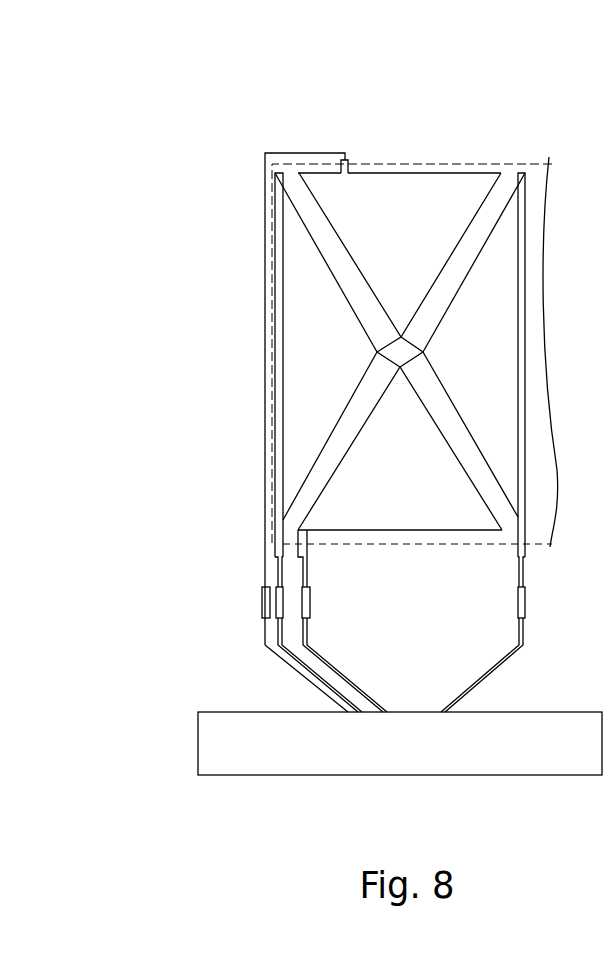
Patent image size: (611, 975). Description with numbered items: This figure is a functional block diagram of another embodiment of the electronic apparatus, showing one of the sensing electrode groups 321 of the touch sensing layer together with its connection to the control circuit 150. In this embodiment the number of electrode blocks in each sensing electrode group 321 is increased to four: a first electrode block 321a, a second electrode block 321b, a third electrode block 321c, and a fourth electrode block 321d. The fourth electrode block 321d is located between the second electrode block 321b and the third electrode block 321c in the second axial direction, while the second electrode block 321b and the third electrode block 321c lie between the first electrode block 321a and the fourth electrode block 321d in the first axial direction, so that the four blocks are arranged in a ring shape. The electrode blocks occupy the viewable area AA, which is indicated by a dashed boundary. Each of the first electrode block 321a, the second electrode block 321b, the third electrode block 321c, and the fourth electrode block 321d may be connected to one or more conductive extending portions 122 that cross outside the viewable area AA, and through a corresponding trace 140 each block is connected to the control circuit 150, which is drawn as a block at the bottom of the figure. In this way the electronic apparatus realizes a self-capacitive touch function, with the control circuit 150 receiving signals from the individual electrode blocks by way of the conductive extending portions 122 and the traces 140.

The sensing electrode group 321 is at (247, 53).
The first electrode block 321a is at (302, 253).
The second electrode block 321b is at (387, 190).
The third electrode block 321c is at (405, 407).
The fourth electrode block 321d is at (507, 243).
The conductive extending portion 122 is at (308, 550).
The trace 140 is at (265, 317).
The viewable area AA is at (272, 368).
The control circuit 150 is at (198, 741).